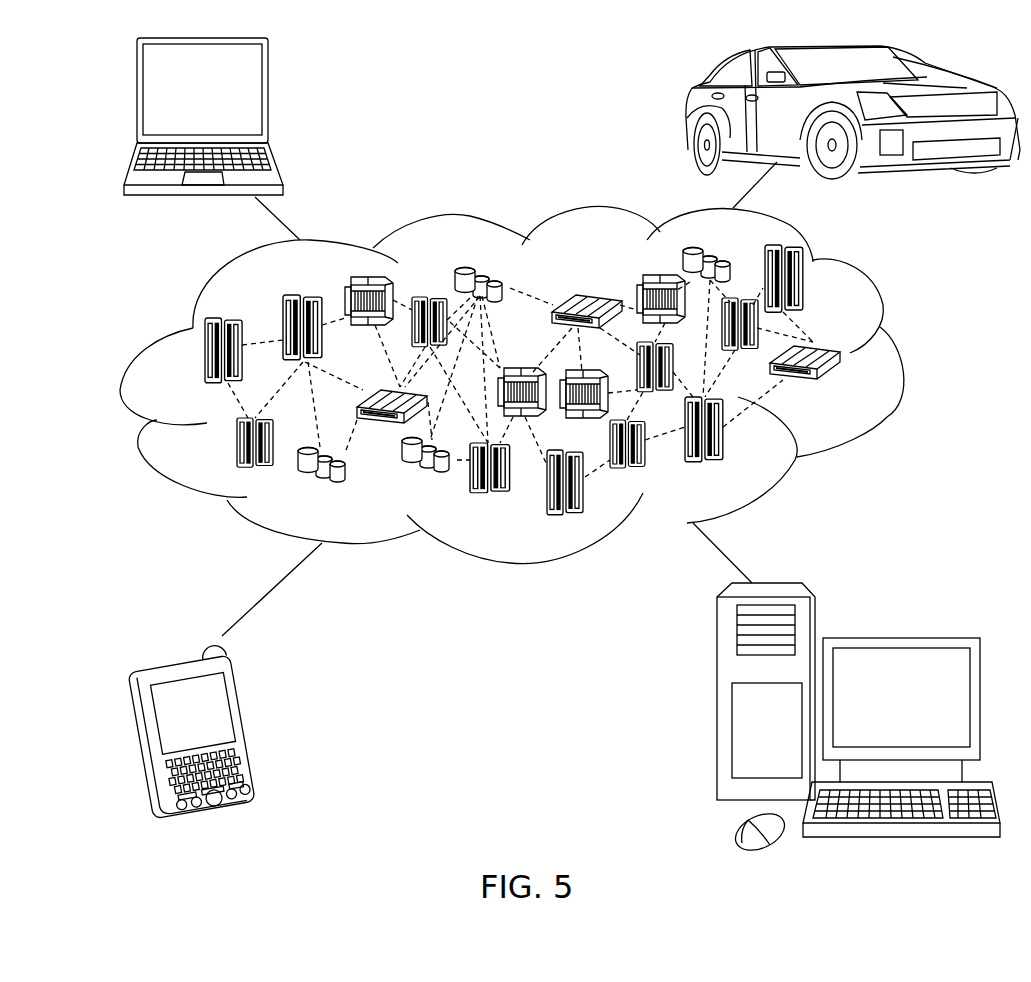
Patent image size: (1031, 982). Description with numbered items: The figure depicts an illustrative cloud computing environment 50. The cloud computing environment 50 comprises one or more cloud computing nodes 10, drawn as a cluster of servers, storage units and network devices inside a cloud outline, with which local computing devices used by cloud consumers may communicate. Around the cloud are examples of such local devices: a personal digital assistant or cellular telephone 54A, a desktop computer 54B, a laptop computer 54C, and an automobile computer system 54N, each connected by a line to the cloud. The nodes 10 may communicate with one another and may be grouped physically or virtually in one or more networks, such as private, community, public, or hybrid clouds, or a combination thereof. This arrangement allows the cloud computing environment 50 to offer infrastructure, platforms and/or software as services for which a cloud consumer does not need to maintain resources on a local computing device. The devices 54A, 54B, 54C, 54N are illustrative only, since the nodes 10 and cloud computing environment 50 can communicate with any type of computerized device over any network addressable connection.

The cloud computing nodes 10 is at (850, 389).
The cloud computing environment 50 is at (898, 358).
The personal digital assistant (PDA) or cellular telephone 54A is at (258, 727).
The desktop computer 54B is at (900, 632).
The laptop computer 54C is at (268, 97).
The automobile computer system 54N is at (688, 115).